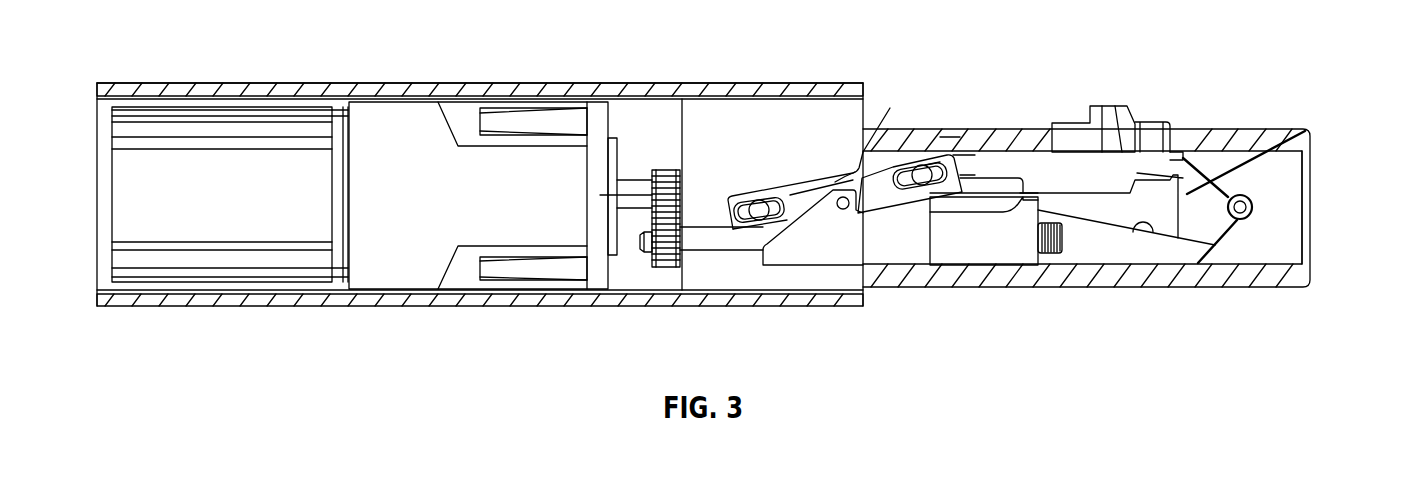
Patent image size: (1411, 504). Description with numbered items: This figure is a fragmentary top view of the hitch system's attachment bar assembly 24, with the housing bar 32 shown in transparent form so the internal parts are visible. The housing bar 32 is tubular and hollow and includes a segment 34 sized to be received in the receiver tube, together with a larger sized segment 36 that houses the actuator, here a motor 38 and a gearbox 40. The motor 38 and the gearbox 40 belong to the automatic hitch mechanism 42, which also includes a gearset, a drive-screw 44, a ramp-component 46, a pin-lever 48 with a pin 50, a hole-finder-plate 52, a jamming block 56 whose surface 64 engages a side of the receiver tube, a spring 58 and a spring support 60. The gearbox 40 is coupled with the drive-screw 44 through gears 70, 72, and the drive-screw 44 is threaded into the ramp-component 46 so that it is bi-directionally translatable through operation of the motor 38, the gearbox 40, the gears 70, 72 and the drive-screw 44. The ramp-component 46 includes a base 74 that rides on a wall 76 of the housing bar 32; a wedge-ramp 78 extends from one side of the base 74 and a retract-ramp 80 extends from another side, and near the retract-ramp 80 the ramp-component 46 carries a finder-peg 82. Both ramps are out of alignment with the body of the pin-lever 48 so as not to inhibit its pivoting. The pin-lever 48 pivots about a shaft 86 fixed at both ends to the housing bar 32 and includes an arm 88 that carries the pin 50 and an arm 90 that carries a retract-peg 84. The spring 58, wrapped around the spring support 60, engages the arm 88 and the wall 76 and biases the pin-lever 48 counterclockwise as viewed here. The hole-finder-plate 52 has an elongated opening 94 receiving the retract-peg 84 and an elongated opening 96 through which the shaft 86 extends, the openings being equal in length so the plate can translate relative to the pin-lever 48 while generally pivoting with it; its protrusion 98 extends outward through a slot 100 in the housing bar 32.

The attachment bar assembly 24 is at (541, 70).
The housing bar 32 is at (350, 83).
The segment 34 is at (1242, 140).
The larger sized segment 36 is at (298, 297).
The motor 38 is at (216, 207).
The gearbox 40 is at (476, 207).
The automatic hitch mechanism 42 is at (897, 211).
The drive-screw 44 is at (720, 238).
The ramp-component 46 is at (945, 251).
The pin-lever 48 is at (1069, 189).
The pin 50 is at (1108, 106).
The hole-finder-plate 52 is at (866, 196).
The jamming block 56 is at (1160, 123).
The spring 58 is at (1297, 282).
The spring support 60 is at (1242, 207).
The surface 64 is at (1138, 122).
The gear 70 is at (657, 258).
The gear 72 is at (663, 170).
The base 74 is at (1002, 258).
The wall 76 is at (1220, 273).
The wedge-ramp 78 is at (1152, 232).
The retract-ramp 80 is at (815, 188).
The finder-peg 82 is at (843, 210).
The retract-peg 84 is at (759, 212).
The shaft 86 is at (940, 158).
The arm 88 is at (1185, 155).
The arm 90 is at (1008, 168).
The elongated opening 94 is at (782, 193).
The elongated opening 96 is at (950, 137).
The protrusion 98 is at (890, 108).
The slot 100 is at (922, 175).